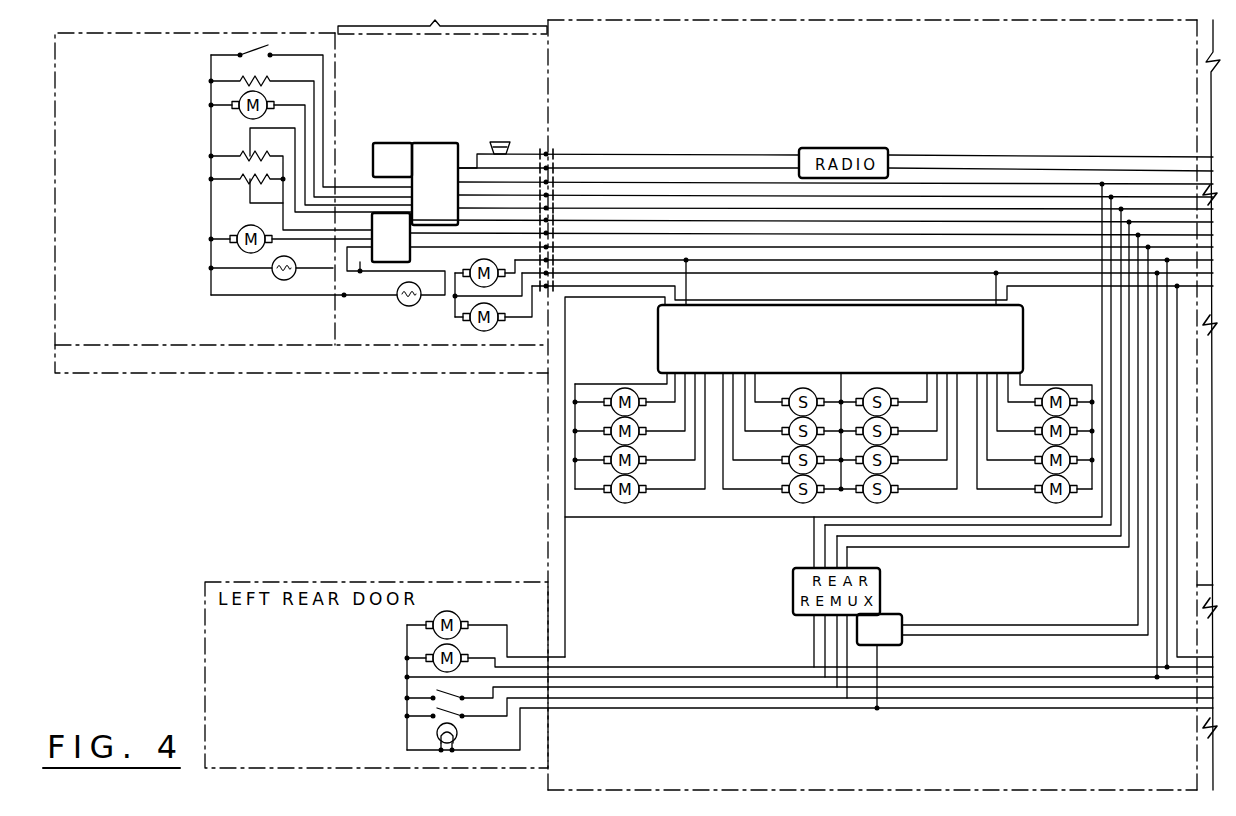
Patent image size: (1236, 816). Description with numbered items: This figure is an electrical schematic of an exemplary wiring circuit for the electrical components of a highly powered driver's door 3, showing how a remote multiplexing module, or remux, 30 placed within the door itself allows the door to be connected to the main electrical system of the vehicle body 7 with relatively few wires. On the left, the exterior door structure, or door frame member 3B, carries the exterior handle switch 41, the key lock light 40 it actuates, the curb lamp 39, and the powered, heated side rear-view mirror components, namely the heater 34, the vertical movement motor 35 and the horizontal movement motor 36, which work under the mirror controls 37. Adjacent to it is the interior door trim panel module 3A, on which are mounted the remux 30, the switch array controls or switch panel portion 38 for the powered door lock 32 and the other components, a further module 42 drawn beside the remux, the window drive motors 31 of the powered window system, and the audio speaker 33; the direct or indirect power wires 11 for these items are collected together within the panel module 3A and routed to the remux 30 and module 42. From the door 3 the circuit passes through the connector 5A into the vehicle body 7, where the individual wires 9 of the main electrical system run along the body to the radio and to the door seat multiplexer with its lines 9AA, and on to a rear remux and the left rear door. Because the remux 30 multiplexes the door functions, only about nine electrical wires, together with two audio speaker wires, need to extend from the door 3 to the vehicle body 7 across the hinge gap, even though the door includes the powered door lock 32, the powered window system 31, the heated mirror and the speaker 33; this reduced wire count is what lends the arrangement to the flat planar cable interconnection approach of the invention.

The driver's door 3 is at (438, 371).
The interior door trim panel module 3A is at (442, 50).
The door frame member 3B is at (140, 64).
The connector 5A is at (551, 152).
The vehicle body 7 is at (904, 80).
The individual wires 9 is at (690, 195).
The door seat mux lines 9AA is at (1020, 312).
The power wires 11 is at (477, 158).
The remote multiplexing module 30 is at (444, 193).
The window drive motors 31 is at (497, 326).
The powered door lock actuator 32 is at (478, 267).
The audio speaker 33 is at (506, 115).
The heater 34 is at (311, 131).
The vertical movement motor 35 is at (311, 145).
The horizontal movement motor 36 is at (291, 247).
The mirror controls 37 is at (204, 145).
The switch array controls 38 is at (400, 170).
The curb lamp 39 is at (328, 284).
The key lock light 40 is at (272, 276).
The exterior handle switch 41 is at (311, 112).
The module 42 is at (400, 249).